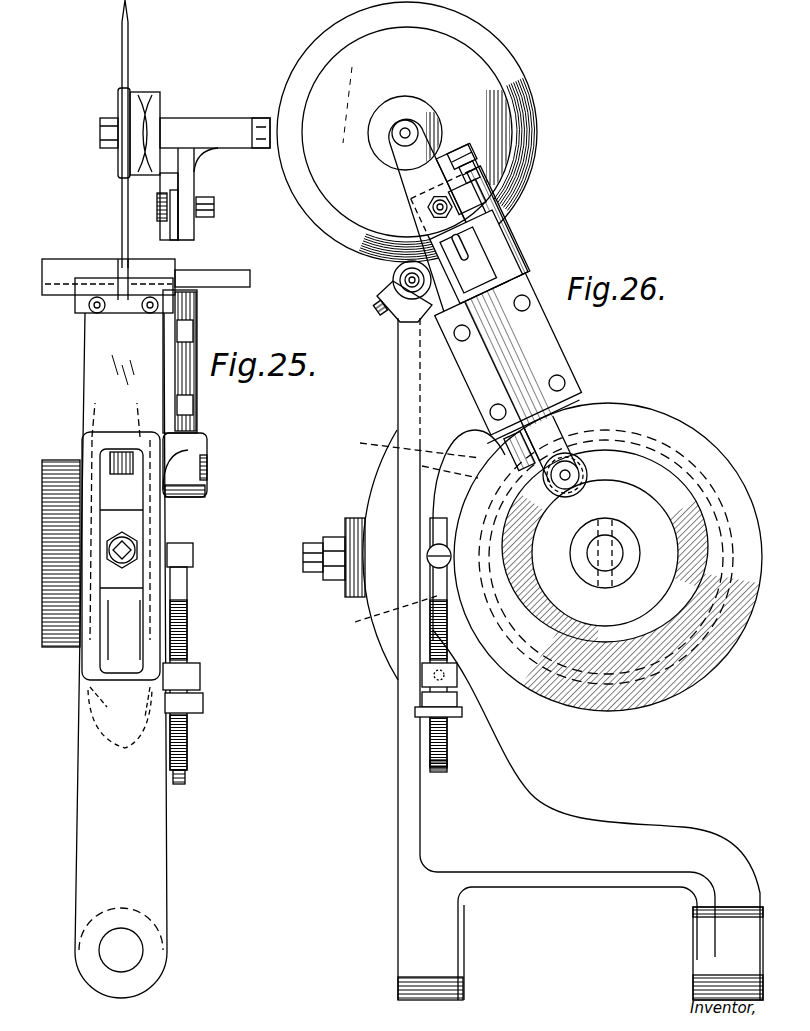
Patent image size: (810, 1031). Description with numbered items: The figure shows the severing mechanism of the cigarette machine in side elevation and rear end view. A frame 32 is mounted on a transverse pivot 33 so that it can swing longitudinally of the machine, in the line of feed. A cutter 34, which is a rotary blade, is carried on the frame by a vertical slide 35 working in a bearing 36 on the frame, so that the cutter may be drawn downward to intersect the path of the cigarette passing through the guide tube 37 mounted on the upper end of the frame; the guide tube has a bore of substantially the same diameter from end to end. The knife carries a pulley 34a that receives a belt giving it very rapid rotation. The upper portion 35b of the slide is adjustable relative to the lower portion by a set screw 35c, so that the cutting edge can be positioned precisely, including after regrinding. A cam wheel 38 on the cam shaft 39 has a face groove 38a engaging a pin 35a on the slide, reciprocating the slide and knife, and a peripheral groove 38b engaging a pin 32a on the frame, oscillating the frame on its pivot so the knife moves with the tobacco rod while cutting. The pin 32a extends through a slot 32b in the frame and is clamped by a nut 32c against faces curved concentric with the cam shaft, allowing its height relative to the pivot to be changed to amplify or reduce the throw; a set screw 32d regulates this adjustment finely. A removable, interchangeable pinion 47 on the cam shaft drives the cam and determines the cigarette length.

In FIG. 25, the frame 32 is at (145, 808).
In FIG. 26, the frame 32 is at (525, 800).
In FIG. 26, the pin 32a is at (379, 618).
In FIG. 25, the slot 32b is at (128, 652).
In FIG. 25, the nut 32c is at (140, 545).
In FIG. 26, the nut 32c is at (330, 542).
In FIG. 25, the set screw 32d is at (188, 610).
In FIG. 26, the set screw 32d is at (435, 655).
In FIG. 25, the transverse pivot 33 is at (135, 940).
In FIG. 26, the transverse pivot 33 is at (466, 957).
In FIG. 25, the cutter 34 is at (121, 206).
In FIG. 26, the cutter 34 is at (407, 132).
In FIG. 25, the pulley 34a is at (146, 108).
In FIG. 26, the pulley 34a is at (418, 108).
In FIG. 25, the vertical slide 35 is at (176, 252).
In FIG. 26, the vertical slide 35 is at (490, 278).
In FIG. 25, the pin 35a is at (208, 490).
In FIG. 26, the pin 35a is at (567, 472).
In FIG. 25, the upper portion of the slide 35b is at (203, 178).
In FIG. 26, the upper portion of the slide 35b is at (436, 165).
In FIG. 26, the set screw 35c is at (478, 190).
In FIG. 25, the bearing 36 is at (190, 385).
In FIG. 26, the bearing 36 is at (540, 356).
In FIG. 25, the guide tube 37 is at (75, 265).
In FIG. 26, the guide tube 37 is at (393, 275).
In FIG. 26, the cam wheel 38 is at (655, 424).
In FIG. 26, the face groove 38a is at (700, 512).
In FIG. 25, the peripheral groove 38b is at (120, 729).
In FIG. 26, the peripheral groove 38b is at (606, 568).
In FIG. 26, the cam shaft 39 is at (614, 548).
In FIG. 25, the pinion 47 is at (60, 648).